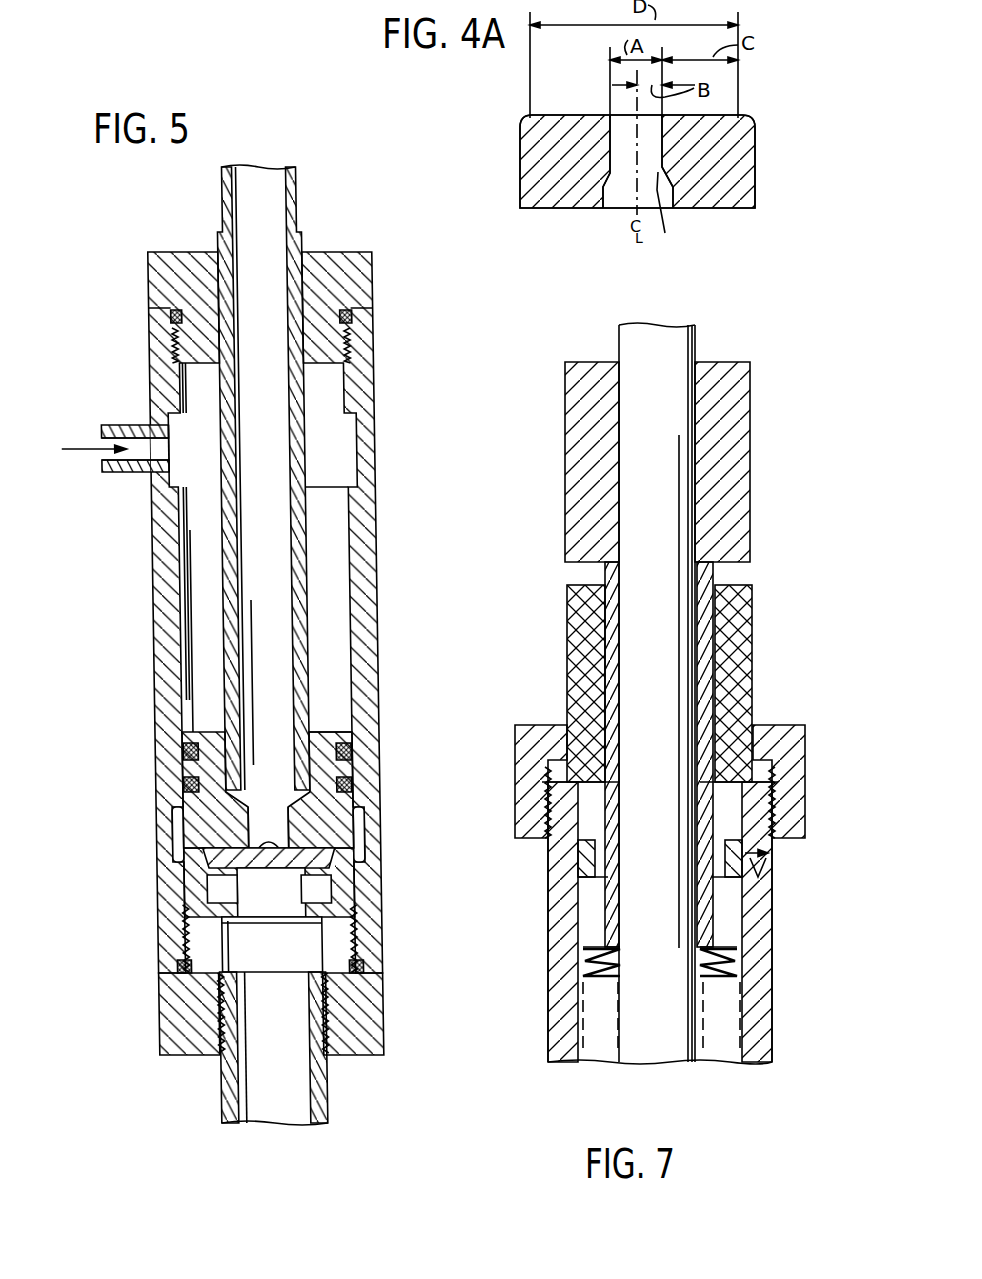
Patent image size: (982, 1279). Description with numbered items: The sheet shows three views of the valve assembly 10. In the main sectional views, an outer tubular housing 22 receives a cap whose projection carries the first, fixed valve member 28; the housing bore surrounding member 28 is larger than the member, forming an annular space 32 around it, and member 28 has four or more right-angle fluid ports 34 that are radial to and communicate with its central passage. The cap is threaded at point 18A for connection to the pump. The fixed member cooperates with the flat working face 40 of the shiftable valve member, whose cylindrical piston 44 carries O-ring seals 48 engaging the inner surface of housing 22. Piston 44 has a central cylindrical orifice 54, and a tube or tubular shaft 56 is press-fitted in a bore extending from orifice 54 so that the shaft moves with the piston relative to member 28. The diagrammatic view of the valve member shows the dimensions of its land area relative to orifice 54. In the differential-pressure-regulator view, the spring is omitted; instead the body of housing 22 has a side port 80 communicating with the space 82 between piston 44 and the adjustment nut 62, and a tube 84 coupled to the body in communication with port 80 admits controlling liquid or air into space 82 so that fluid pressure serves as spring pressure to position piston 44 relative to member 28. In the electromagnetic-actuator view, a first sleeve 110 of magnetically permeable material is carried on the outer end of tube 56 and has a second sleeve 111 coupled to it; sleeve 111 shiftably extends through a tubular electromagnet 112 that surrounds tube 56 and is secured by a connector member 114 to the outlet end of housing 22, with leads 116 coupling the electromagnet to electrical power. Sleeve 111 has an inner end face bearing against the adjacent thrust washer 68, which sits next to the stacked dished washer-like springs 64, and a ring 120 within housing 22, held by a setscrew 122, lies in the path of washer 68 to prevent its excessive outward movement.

In FIG. 5, the assembly 10 is at (254, 645).
In FIG. 7, the assembly 10 is at (674, 689).
In FIG. 5, the threaded point 18A is at (219, 1035).
In FIG. 5, the outer tubular housing 22 is at (370, 652).
In FIG. 7, the outer tubular housing 22 is at (773, 918).
In FIG. 5, the first fixed valve member 28 is at (337, 868).
In FIG. 5, the annular space 32 is at (167, 862).
In FIG. 5, the right-angle fluid ports 34 is at (200, 893).
In FIG. 4A, the flat working face 40 is at (738, 115).
In FIG. 4A, the cylindrical piston 44 is at (748, 168).
In FIG. 5, the cylindrical piston 44 is at (319, 732).
In FIG. 5, the O-ring seals 48 is at (341, 782).
In FIG. 4A, the central cylindrical orifice 54 is at (672, 215).
In FIG. 5, the central cylindrical orifice 54 is at (265, 832).
In FIG. 5, the tube or tubular shaft 56 is at (294, 235).
In FIG. 7, the tube or tubular shaft 56 is at (697, 342).
In FIG. 5, the adjustment nut 62 is at (337, 327).
In FIG. 7, the washer-like springs 64 is at (583, 972).
In FIG. 7, the thrust washer 68 is at (727, 946).
In FIG. 5, the side port 80 is at (159, 440).
In FIG. 5, the space 82 is at (327, 550).
In FIG. 5, the tube 84 is at (102, 425).
In FIG. 7, the first sleeve 110 is at (750, 448).
In FIG. 7, the second sleeve 111 is at (707, 612).
In FIG. 7, the tubular electromagnet 112 is at (742, 623).
In FIG. 7, the connector member 114 is at (800, 745).
In FIG. 7, the leads 116 is at (567, 606).
In FIG. 7, the ring 120 is at (728, 840).
In FIG. 7, the setscrew 122 is at (773, 888).